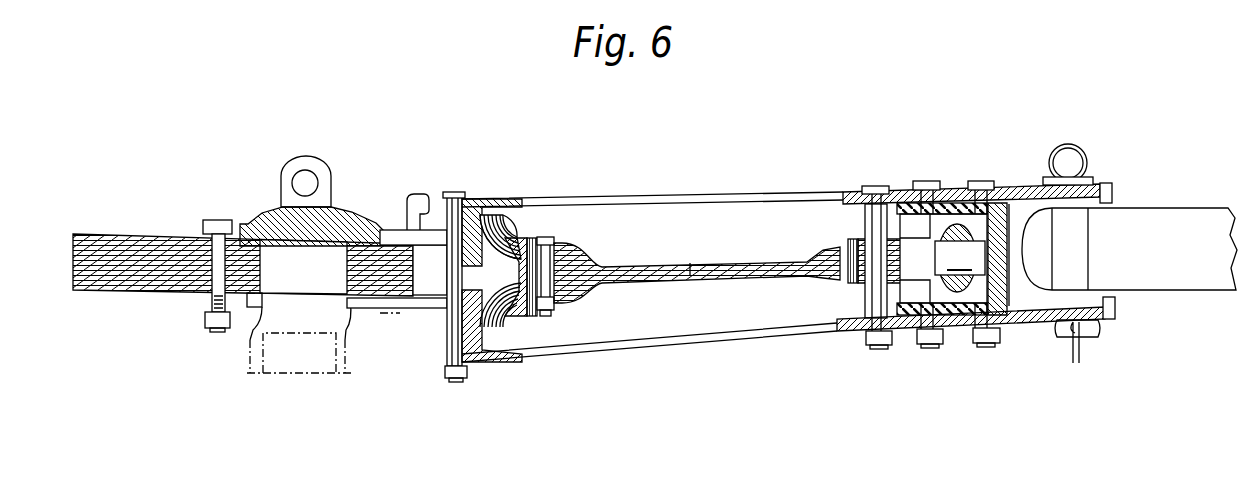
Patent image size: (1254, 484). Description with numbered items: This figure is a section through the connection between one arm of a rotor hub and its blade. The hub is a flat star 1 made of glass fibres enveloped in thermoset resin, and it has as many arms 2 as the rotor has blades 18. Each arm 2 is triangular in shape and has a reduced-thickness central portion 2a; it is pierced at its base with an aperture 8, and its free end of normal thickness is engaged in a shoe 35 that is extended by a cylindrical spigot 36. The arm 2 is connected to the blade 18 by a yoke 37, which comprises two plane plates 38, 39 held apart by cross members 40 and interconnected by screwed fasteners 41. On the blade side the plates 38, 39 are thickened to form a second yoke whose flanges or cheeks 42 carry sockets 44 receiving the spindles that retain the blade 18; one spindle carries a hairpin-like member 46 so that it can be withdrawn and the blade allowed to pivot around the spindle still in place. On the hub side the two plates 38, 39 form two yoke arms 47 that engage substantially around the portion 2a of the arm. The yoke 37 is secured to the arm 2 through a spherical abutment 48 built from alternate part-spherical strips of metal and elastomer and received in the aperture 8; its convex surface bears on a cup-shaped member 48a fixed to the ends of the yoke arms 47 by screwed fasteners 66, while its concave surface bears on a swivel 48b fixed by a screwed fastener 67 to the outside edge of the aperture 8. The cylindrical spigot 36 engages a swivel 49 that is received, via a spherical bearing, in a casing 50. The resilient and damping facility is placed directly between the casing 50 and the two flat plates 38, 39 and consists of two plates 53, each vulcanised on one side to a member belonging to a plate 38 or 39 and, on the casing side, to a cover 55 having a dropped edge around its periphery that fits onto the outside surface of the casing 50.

The flat star 1 is at (163, 230).
The arm 2 is at (630, 252).
The reduced-thickness central portion 2a is at (688, 282).
The aperture 8 is at (428, 305).
The blade 18 is at (1140, 203).
The shoe 35 is at (848, 246).
The cylindrical spigot 36 is at (960, 258).
The yoke 37 is at (826, 342).
The plane plate 38 is at (893, 202).
The plane plate 39 is at (890, 346).
The cross member 40 is at (862, 300).
The screwed fastener 41 is at (986, 343).
The flange or cheek 42 is at (1115, 307).
The socket 44 is at (1095, 177).
The hairpin-like member 46 is at (1078, 348).
The yoke arm 47 is at (613, 198).
The spherical abutment 48 is at (541, 242).
The cup-shaped member 48a is at (481, 207).
The swivel 48b is at (526, 238).
The swivel 49 is at (965, 290).
The casing 50 is at (1004, 312).
The plate 53 is at (945, 204).
The cover 55 is at (921, 327).
The screwed fastener 66 is at (460, 384).
The screwed fastener 67 is at (552, 310).